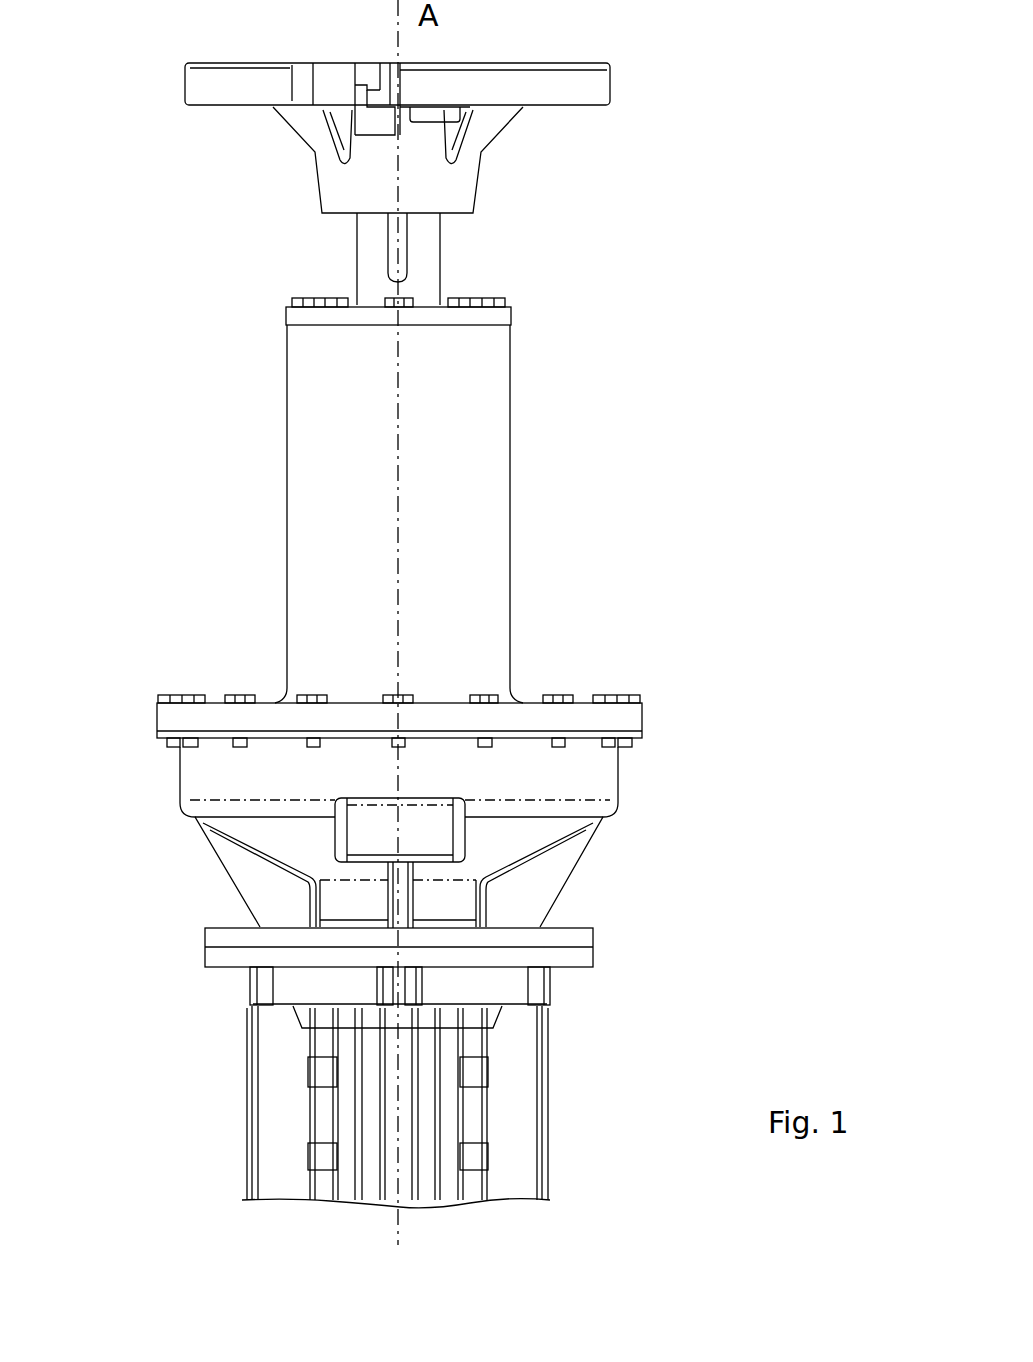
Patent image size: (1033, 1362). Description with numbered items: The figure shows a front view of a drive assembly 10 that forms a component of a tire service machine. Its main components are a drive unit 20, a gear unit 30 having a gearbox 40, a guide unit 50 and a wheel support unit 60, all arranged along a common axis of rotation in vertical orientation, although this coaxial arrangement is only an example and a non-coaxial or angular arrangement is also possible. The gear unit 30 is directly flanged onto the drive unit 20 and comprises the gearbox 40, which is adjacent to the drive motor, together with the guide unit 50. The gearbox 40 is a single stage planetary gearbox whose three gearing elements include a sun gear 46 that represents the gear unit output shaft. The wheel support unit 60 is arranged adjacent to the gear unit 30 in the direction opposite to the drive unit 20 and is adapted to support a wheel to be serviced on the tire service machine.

The drive assembly 10 is at (85, 31).
The drive unit 20 is at (588, 1067).
The gear unit 30 is at (692, 523).
The gearbox 40 is at (399, 831).
The sun gear 46 is at (428, 272).
The guide unit 50 is at (399, 500).
The wheel support unit 60 is at (627, 82).